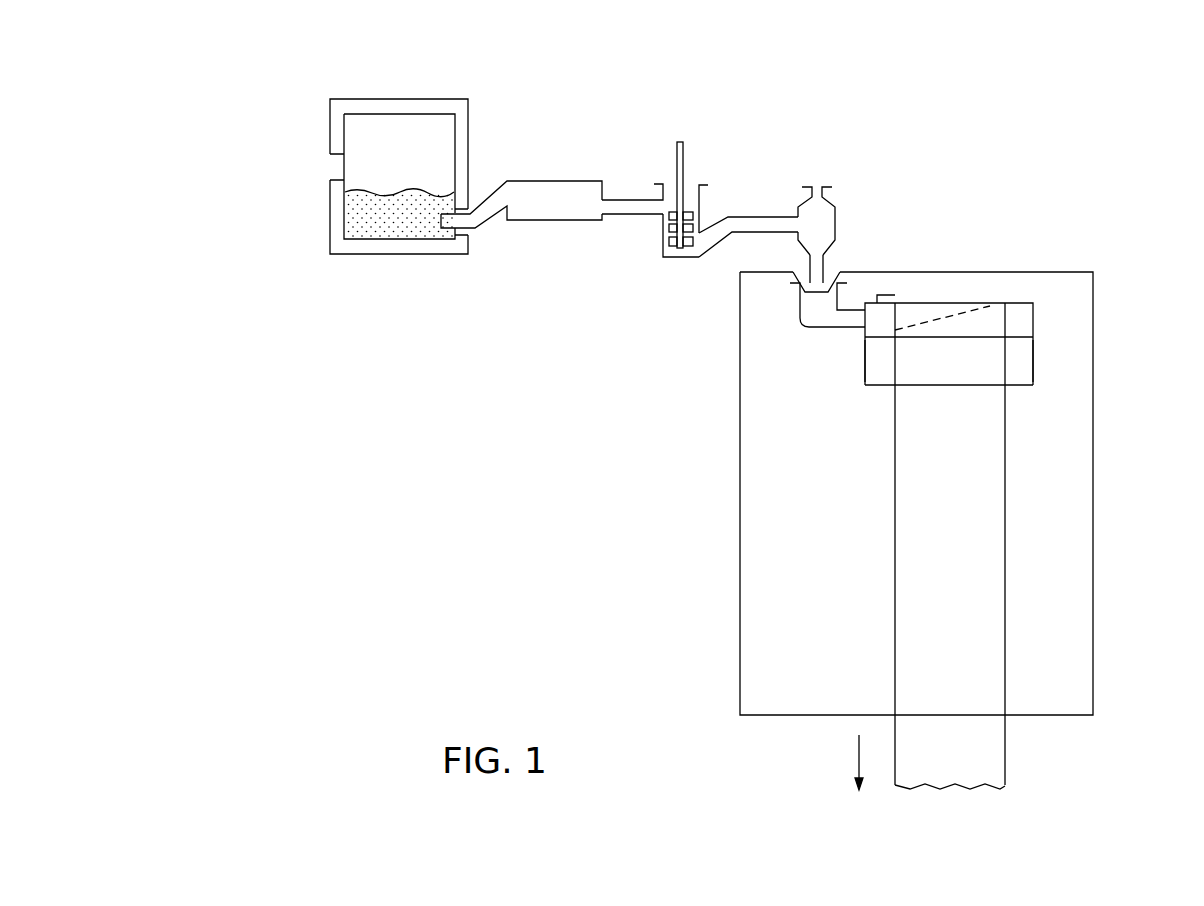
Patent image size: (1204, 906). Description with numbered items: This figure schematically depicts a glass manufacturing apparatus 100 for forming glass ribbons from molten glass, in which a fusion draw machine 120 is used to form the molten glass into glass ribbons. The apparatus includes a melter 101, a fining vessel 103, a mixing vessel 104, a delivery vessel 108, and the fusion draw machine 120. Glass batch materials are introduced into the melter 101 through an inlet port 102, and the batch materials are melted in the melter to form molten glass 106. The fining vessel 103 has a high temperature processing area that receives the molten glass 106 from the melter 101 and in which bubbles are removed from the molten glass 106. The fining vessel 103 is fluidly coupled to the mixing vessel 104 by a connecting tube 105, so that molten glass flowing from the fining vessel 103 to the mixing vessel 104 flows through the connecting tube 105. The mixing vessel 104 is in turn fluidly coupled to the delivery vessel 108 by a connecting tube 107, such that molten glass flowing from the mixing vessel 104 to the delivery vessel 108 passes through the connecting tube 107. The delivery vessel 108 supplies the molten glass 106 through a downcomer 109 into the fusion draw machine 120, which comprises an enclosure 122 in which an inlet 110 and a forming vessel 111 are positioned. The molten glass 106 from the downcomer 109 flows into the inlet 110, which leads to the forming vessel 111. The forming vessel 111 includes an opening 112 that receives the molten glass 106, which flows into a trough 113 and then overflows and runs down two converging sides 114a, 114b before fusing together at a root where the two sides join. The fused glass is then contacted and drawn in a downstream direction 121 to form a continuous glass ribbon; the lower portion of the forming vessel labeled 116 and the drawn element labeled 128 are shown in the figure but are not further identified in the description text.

The glass manufacturing apparatus 100 is at (1075, 170).
The melter 101 is at (421, 93).
The inlet port 102 is at (340, 166).
The fining vessel 103 is at (535, 180).
The mixing vessel 104 is at (704, 196).
The connecting tube 105 is at (622, 215).
The molten glass 106 is at (424, 191).
The connecting tube 107 is at (757, 234).
The delivery vessel 108 is at (836, 222).
The downcomer 109 is at (824, 266).
The inlet 110 is at (800, 318).
The forming vessel 111 is at (1033, 320).
The opening 112 is at (864, 331).
The trough 113 is at (953, 304).
The converging side 114a is at (907, 368).
The converging side 114b is at (1033, 355).
The chamber base 116 is at (930, 386).
The fusion draw machine 120 is at (1085, 262).
The downstream direction 121 is at (857, 756).
The enclosure 122 is at (740, 386).
The substrate strip 128 is at (1006, 746).